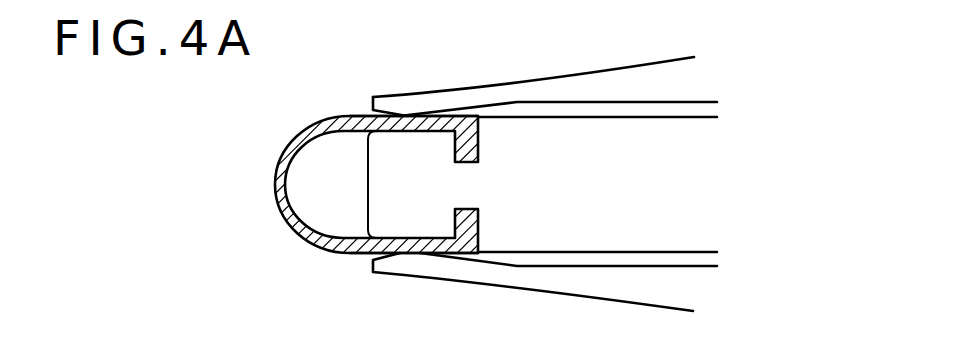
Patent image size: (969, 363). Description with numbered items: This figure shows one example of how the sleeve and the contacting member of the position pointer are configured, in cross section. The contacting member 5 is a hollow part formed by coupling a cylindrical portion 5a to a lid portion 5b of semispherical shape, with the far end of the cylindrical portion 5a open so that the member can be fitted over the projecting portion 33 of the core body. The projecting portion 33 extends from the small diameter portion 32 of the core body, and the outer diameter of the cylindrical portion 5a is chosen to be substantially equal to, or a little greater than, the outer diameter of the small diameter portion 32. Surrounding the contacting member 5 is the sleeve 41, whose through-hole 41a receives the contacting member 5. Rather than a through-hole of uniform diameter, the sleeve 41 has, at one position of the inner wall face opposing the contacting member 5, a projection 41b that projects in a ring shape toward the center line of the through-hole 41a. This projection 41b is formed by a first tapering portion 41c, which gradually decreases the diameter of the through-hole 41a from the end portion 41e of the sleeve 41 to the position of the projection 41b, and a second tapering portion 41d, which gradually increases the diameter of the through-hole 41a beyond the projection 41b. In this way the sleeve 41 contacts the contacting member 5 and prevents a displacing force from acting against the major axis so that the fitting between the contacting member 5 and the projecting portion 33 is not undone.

The contacting member 5 is at (290, 138).
The cylindrical portion 5a is at (432, 127).
The lid portion 5b is at (315, 245).
The projecting portion 33 is at (398, 218).
The small diameter portion 32 is at (587, 230).
The sleeve 41 is at (511, 184).
The through-hole 41a is at (572, 110).
The projection 41b is at (407, 255).
The first tapering portion 41c is at (392, 257).
The second tapering portion 41d is at (452, 257).
The end portion 41e is at (373, 103).